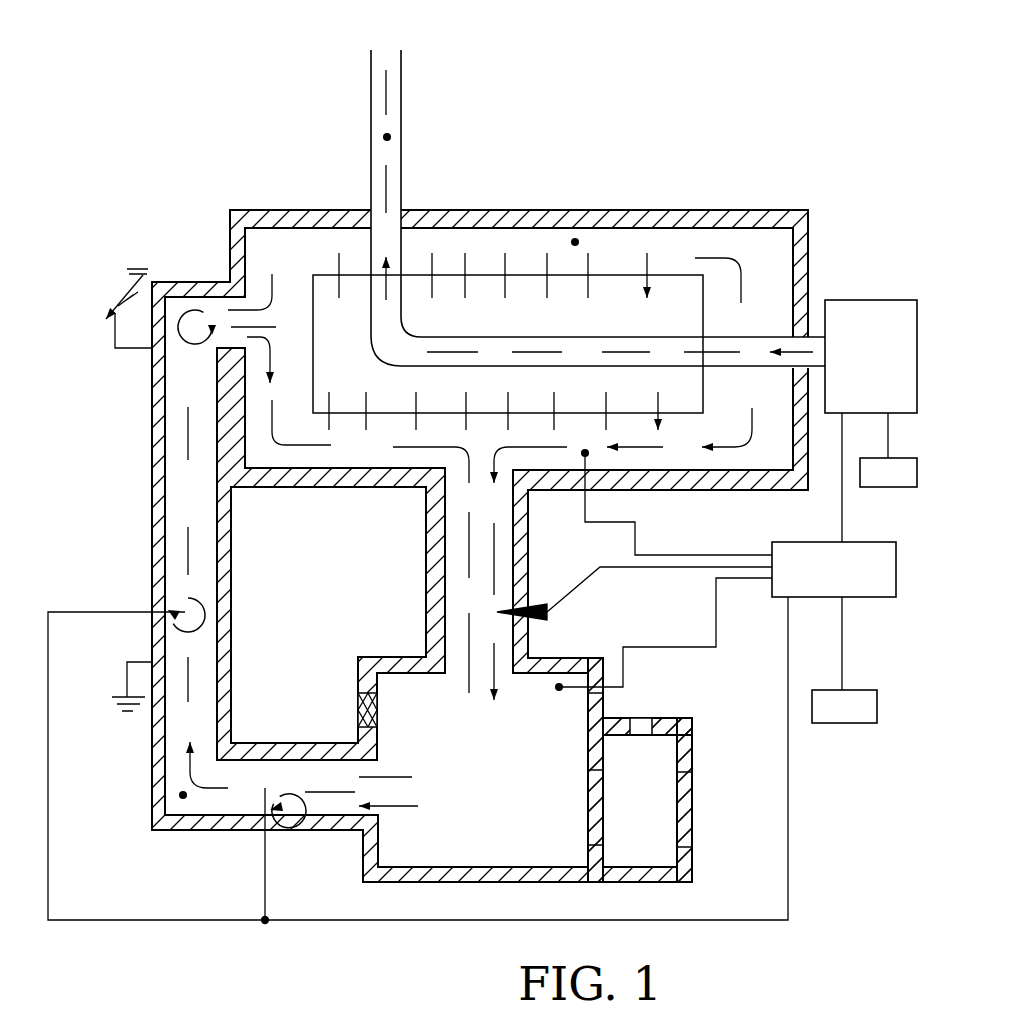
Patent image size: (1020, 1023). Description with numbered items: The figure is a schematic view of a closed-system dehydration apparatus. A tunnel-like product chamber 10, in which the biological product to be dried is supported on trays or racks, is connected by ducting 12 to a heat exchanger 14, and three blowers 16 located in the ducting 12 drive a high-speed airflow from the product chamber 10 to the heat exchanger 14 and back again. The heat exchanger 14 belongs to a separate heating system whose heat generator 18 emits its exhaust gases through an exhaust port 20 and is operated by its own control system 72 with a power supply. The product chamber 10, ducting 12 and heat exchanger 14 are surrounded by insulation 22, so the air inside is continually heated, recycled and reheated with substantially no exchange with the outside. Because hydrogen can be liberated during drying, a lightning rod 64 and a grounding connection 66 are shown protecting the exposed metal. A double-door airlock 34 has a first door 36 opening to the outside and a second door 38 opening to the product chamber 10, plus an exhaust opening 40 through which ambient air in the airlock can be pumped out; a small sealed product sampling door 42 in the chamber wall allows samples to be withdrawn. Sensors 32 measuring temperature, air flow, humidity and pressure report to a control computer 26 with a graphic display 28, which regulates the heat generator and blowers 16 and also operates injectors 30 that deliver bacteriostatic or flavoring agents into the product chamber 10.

The product chamber 10 is at (410, 683).
The ducting 12 is at (207, 540).
The heat exchanger 14 is at (620, 290).
The blowers 16 is at (192, 320).
The heat generator 18 is at (840, 306).
The exhaust port 20 is at (393, 58).
The insulation 22 is at (760, 215).
The control computer 26 is at (472, 668).
The graphic display 28 is at (844, 706).
The injectors 30 is at (540, 605).
The sensors 32 is at (387, 137).
The double-door airlock 34 is at (658, 758).
The first door 36 is at (690, 805).
The second door 38 is at (588, 792).
The exhaust opening 40 is at (642, 718).
The product sampling door 42 is at (360, 700).
The lightning rod 64 is at (120, 297).
The grounding connection 66 is at (125, 672).
The control system 72 is at (888, 450).